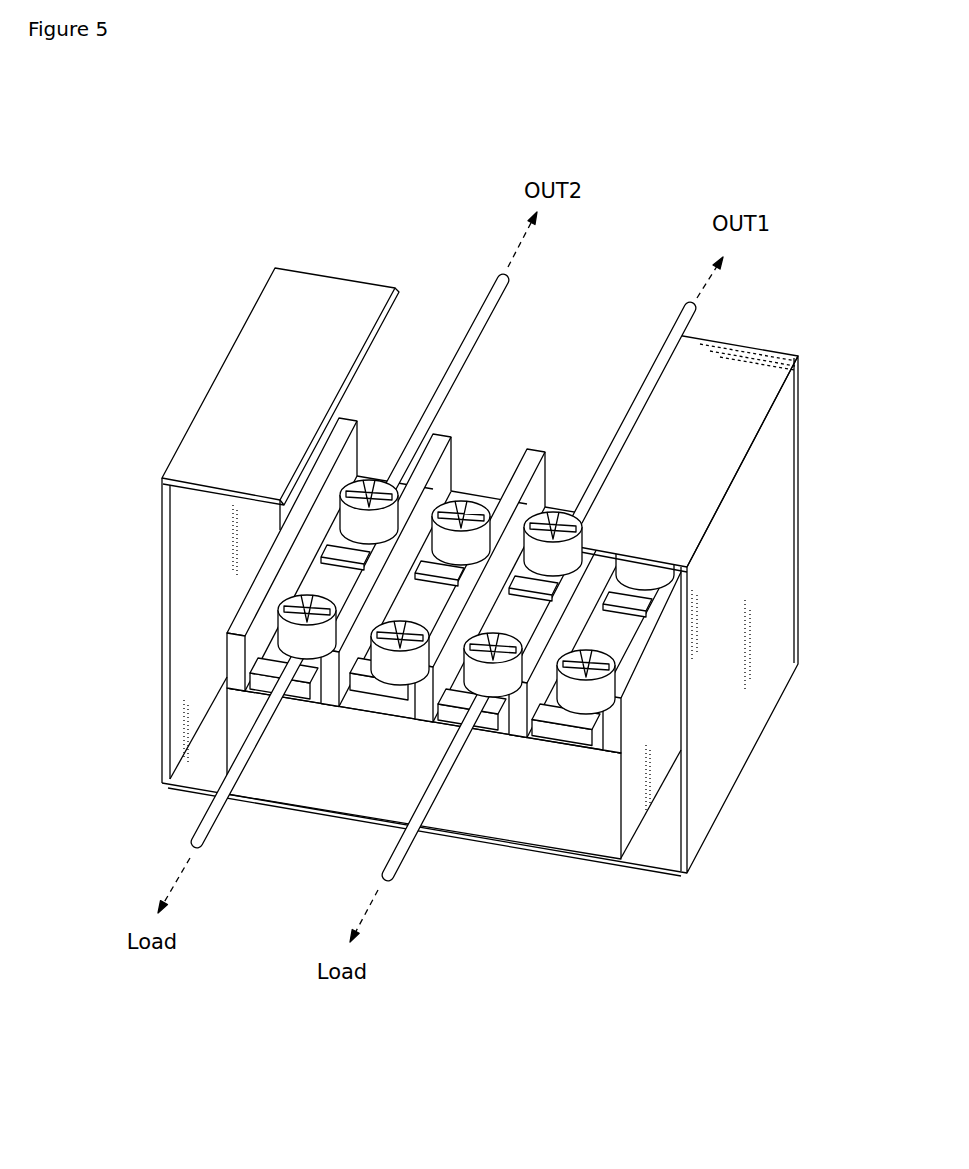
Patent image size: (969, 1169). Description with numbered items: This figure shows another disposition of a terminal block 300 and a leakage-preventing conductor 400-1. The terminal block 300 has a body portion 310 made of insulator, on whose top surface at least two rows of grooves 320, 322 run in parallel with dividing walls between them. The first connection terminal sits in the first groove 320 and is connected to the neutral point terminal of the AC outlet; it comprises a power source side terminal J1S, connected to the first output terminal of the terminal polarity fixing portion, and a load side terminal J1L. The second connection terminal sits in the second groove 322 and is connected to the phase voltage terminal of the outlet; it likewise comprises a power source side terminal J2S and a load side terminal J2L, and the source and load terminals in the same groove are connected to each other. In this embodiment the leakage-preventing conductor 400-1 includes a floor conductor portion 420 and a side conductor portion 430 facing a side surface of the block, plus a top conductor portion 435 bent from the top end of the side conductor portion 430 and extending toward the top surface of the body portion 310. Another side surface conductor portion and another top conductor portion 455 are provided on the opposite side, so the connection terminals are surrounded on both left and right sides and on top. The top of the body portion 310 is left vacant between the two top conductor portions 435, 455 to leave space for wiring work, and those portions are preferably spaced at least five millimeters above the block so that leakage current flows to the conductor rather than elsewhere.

The terminal block 300 is at (572, 812).
The body portion 310 is at (637, 783).
The first groove 320 is at (498, 702).
The second groove 322 is at (312, 670).
The leakage-preventing conductor 400-1 is at (150, 698).
The floor conductor portion 420 is at (193, 792).
The side conductor portion 430 is at (162, 556).
The top conductor portion 435 is at (346, 297).
The another top conductor portion 455 is at (727, 380).
The power source side terminal of first connection terminal J1S is at (657, 573).
The load side terminal of first connection terminal J1L is at (643, 680).
The power source side terminal of second connection terminal J2S is at (360, 482).
The load side terminal of second connection terminal J2L is at (295, 600).